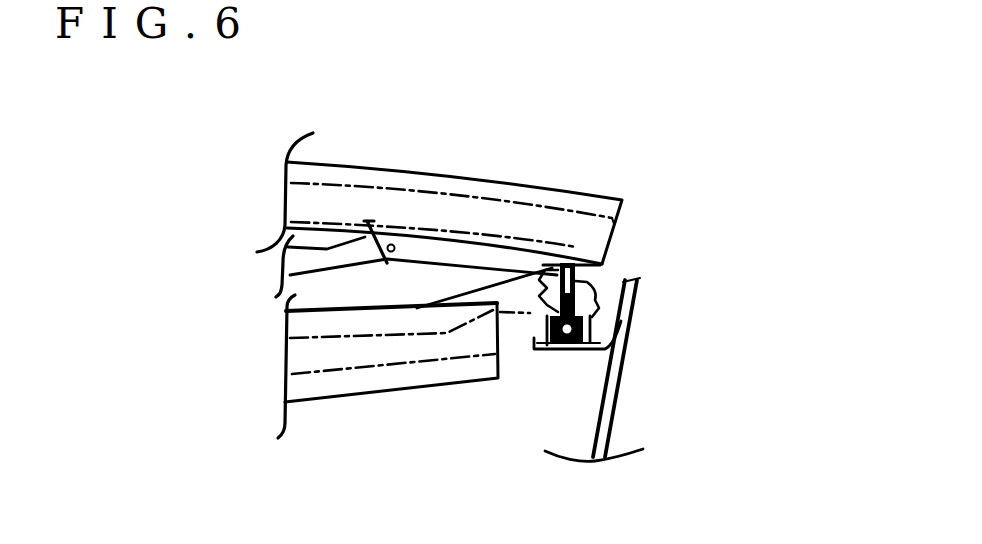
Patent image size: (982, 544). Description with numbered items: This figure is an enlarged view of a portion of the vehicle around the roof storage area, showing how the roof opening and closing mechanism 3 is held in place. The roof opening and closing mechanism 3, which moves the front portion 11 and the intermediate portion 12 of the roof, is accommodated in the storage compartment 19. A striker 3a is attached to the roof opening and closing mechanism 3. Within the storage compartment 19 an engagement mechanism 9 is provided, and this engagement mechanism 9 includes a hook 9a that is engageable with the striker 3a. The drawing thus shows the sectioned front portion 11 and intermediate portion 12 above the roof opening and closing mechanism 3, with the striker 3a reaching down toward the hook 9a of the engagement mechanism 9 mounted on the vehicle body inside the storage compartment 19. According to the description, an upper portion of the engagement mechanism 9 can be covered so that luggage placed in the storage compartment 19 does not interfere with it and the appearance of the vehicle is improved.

The roof opening and closing mechanism 3 is at (327, 250).
The striker 3a is at (588, 272).
The engagement mechanism 9 is at (564, 355).
The hook 9a is at (596, 283).
The front portion 11 is at (440, 177).
The intermediate portion 12 is at (362, 382).
The storage compartment 19 is at (540, 518).